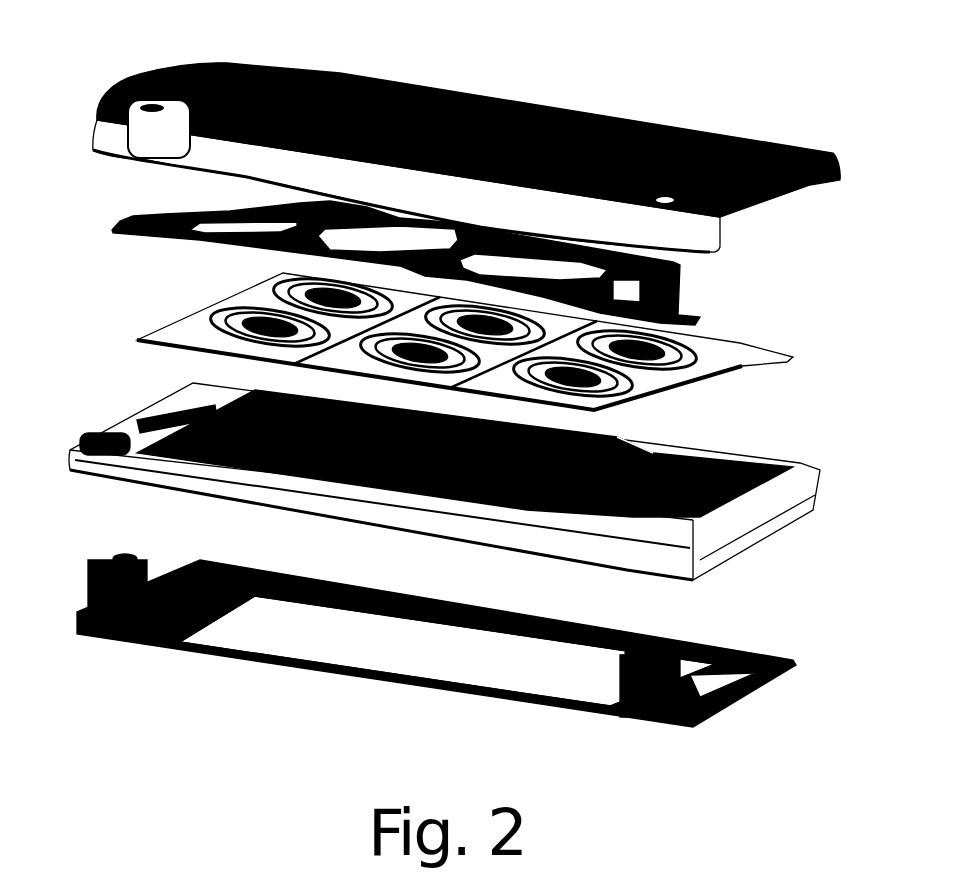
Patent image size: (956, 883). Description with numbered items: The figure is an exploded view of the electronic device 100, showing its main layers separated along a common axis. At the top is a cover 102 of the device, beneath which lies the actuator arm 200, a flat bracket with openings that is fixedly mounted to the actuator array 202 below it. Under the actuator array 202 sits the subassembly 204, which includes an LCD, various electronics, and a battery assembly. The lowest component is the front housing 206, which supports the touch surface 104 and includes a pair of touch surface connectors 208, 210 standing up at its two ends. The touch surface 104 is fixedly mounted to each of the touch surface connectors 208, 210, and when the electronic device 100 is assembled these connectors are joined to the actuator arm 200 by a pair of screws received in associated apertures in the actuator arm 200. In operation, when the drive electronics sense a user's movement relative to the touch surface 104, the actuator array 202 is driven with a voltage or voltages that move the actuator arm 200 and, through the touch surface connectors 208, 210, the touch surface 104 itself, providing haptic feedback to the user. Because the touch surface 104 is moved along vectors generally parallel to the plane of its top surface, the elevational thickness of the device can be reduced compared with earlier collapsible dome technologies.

The electronic device 100 is at (124, 40).
The rear cover 102 is at (432, 87).
The touch surface 104 is at (397, 648).
The actuator arm 200 is at (127, 223).
The actuator array 202 is at (160, 323).
The subassembly 204 is at (93, 427).
The front housing 206 is at (407, 628).
The touch surface connector 208 is at (93, 563).
The touch surface connector 210 is at (688, 640).